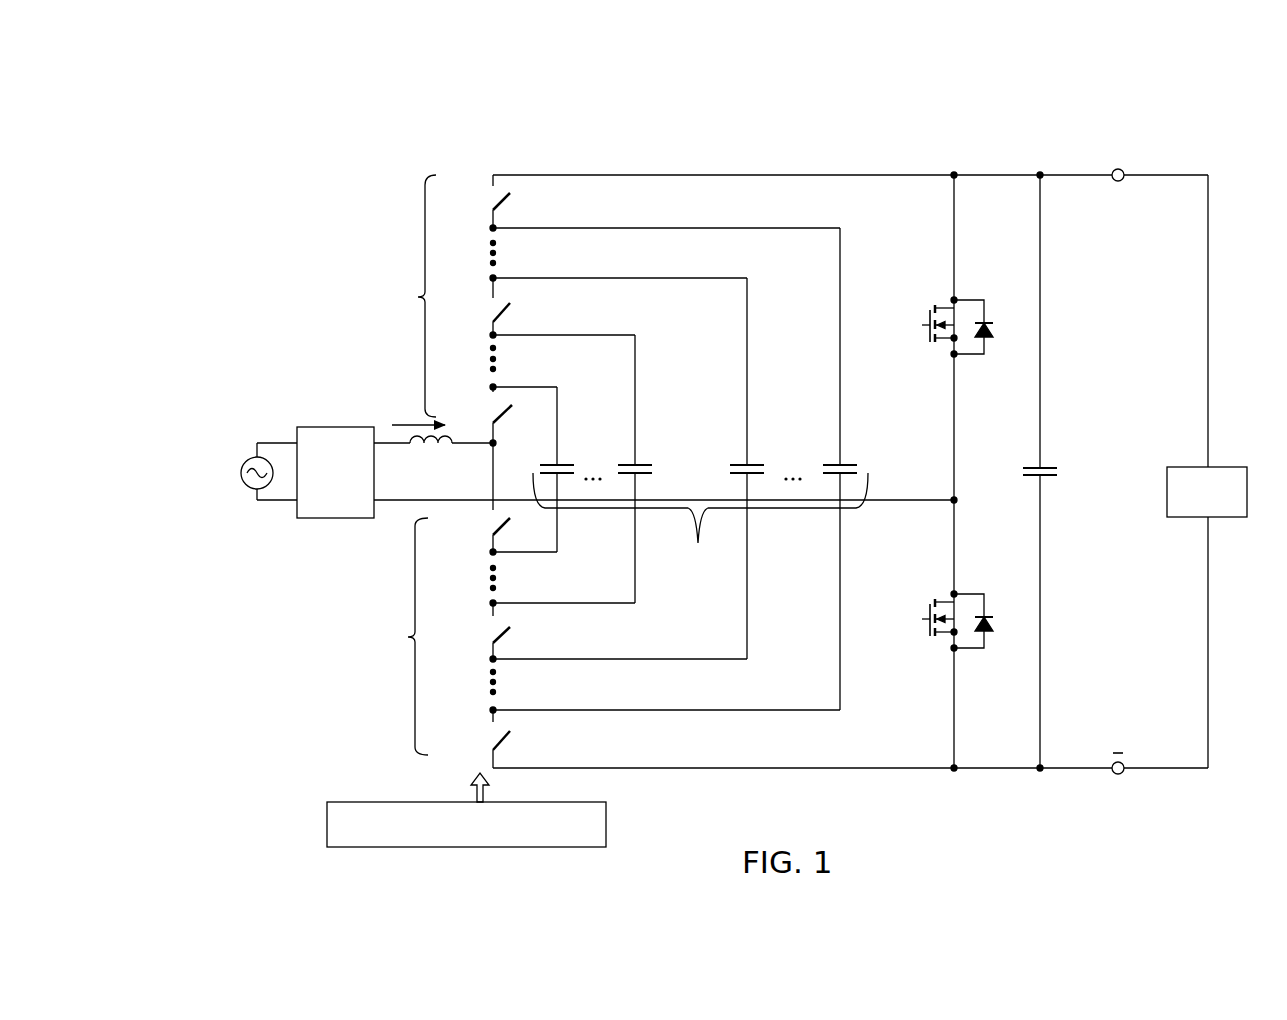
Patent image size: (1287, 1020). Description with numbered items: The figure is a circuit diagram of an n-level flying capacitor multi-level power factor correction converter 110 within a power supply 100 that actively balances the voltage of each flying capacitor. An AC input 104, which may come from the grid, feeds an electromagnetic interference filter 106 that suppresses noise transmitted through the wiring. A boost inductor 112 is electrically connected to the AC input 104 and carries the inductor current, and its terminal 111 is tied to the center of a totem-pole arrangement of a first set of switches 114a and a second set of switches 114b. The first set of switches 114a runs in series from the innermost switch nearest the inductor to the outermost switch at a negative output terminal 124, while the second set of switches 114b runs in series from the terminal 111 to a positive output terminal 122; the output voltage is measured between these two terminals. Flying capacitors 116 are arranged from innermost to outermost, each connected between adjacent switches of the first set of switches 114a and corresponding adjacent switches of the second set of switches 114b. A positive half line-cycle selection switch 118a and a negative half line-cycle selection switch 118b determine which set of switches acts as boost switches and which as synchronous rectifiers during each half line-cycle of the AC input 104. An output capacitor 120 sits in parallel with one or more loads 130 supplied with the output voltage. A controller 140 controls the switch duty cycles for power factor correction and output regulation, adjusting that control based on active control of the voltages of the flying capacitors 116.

The power supply 100 is at (100, 135).
The AC input 104 is at (247, 479).
The electromagnetic interference (EMI) filter 106 is at (330, 425).
The FCML PFC converter 110 is at (338, 352).
The terminal of the boost inductor 111 is at (494, 443).
The boost inductor 112 is at (422, 452).
The first set of switches 114a is at (407, 637).
The second set of switches 114b is at (417, 297).
The flying capacitors 116 is at (702, 469).
The positive half line-cycle selection switch 118a is at (966, 665).
The negative half line-cycle selection switch 118b is at (941, 293).
The output capacitor 120 is at (1052, 480).
The positive output terminal 122 is at (1122, 169).
The negative output terminal 124 is at (1123, 773).
The loads 130 is at (1228, 465).
The controller 140 is at (466, 810).